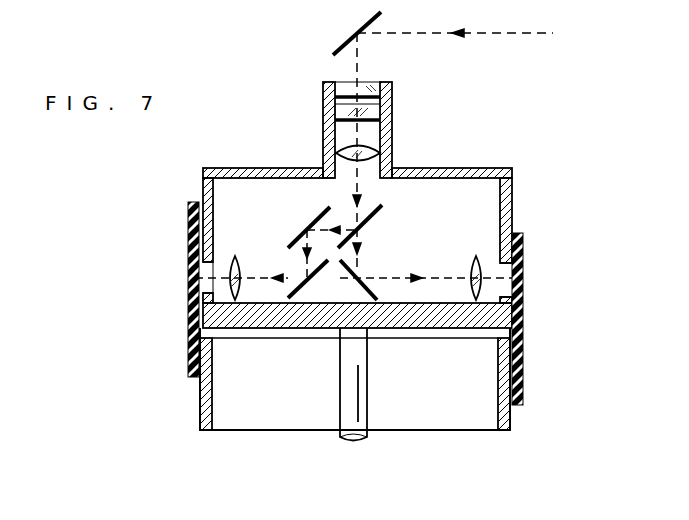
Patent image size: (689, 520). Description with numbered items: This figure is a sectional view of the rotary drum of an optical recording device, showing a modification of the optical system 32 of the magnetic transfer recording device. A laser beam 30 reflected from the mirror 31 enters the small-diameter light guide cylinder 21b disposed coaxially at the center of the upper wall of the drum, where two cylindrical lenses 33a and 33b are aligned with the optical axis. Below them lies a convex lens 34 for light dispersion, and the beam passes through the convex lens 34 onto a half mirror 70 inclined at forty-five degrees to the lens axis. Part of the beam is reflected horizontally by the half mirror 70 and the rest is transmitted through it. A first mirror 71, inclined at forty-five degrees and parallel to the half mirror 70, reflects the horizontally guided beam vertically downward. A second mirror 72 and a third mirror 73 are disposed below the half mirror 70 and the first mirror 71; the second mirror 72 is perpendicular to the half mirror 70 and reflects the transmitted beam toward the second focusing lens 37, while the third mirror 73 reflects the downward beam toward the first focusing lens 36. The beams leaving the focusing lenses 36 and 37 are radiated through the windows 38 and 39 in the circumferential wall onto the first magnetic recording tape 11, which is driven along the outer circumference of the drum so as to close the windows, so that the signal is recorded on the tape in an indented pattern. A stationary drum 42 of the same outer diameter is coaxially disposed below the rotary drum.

The first magnetic recording tape 11 is at (462, 168).
The light guide cylinder 21b is at (323, 100).
The laser beam 30 is at (503, 32).
The mirror 31 is at (345, 40).
The optical system 32 is at (320, 191).
The cylindrical lens 33a is at (372, 92).
The cylindrical lens 33b is at (375, 113).
The convex lens 34 is at (380, 156).
The first focusing lens 36 is at (237, 262).
The second focusing lens 37 is at (474, 262).
The window 38 is at (202, 289).
The window 39 is at (523, 280).
The stationary drum 42 is at (190, 376).
The half mirror 70 is at (366, 222).
The first mirror 71 is at (312, 223).
The second mirror 72 is at (364, 286).
The third mirror 73 is at (312, 280).